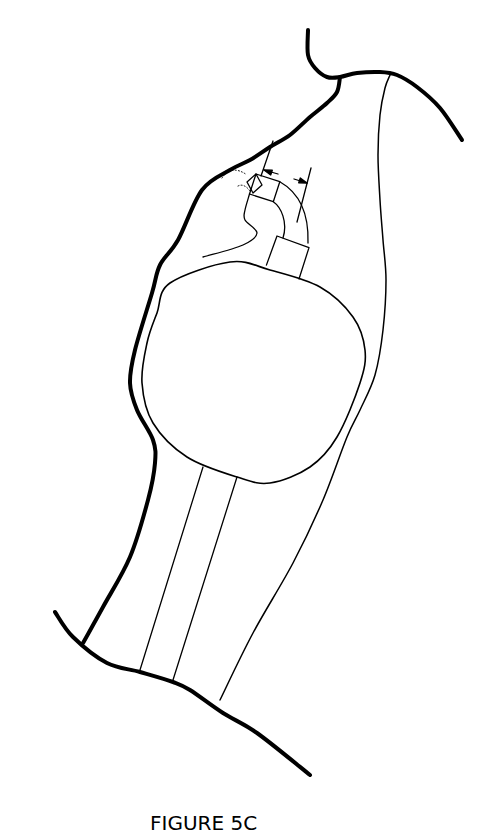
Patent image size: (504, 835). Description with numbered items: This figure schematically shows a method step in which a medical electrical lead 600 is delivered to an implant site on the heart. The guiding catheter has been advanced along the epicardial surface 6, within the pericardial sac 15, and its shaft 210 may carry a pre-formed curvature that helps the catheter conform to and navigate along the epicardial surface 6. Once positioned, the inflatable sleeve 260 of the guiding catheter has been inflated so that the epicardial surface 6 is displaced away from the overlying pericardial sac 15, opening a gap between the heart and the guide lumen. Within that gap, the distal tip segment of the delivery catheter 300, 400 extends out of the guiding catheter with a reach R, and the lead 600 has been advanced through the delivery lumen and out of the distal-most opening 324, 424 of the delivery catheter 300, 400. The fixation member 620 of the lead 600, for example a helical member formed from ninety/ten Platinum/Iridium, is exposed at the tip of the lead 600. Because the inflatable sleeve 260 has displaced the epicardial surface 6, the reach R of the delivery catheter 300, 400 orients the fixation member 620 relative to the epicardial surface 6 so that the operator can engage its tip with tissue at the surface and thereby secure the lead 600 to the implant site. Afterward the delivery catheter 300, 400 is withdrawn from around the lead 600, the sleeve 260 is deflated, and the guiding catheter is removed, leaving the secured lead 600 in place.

The epicardial surface 6 is at (178, 208).
The pericardial sac 15 is at (384, 240).
The shaft 210 is at (187, 582).
The inflatable sleeve 260 is at (300, 415).
The delivery catheter 300 is at (318, 210).
The delivery catheter 400 is at (313, 213).
The distal-most opening 324 is at (158, 239).
The distal-most opening 424 is at (203, 257).
The medical electrical lead 600 is at (250, 168).
The fixation member 620 is at (234, 183).